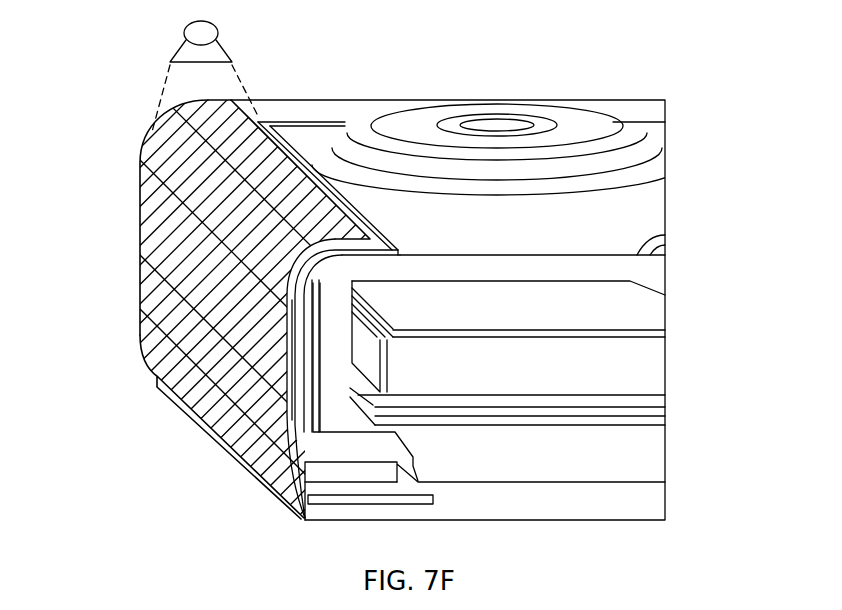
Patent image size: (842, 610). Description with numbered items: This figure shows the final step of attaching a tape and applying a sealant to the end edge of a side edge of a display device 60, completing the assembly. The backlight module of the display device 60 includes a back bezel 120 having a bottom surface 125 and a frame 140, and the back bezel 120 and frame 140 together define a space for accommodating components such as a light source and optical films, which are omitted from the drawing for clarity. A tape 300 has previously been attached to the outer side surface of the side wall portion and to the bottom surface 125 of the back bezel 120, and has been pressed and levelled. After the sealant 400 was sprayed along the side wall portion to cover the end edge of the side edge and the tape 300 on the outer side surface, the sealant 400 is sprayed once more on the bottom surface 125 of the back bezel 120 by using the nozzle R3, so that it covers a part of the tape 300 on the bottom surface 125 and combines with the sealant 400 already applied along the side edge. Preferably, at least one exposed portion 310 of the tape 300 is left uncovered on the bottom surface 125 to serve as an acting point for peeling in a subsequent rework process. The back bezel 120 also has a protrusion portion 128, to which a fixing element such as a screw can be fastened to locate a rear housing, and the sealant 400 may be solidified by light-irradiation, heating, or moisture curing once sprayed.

The display device 60 is at (95, 62).
The nozzle R3 is at (217, 50).
The sealant 400 is at (158, 263).
The tape 300 is at (297, 392).
The exposed portion 310 is at (398, 250).
The bottom surface 125 is at (607, 210).
The protrusion portion 128 is at (570, 123).
The back bezel 120 is at (528, 278).
The frame 140 is at (367, 460).